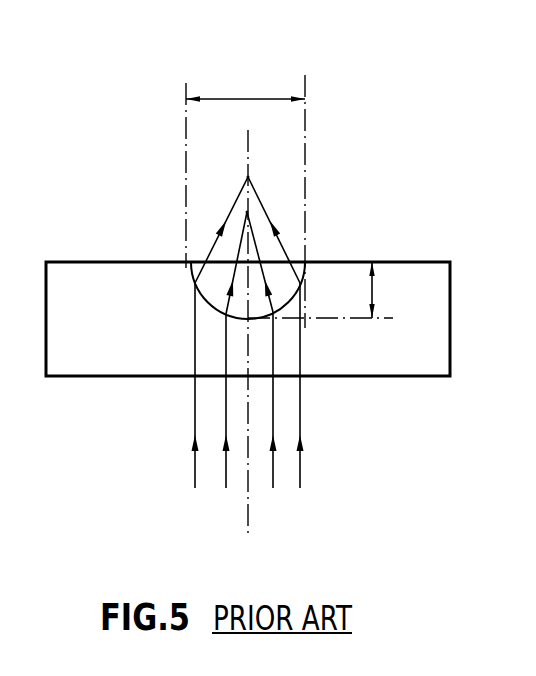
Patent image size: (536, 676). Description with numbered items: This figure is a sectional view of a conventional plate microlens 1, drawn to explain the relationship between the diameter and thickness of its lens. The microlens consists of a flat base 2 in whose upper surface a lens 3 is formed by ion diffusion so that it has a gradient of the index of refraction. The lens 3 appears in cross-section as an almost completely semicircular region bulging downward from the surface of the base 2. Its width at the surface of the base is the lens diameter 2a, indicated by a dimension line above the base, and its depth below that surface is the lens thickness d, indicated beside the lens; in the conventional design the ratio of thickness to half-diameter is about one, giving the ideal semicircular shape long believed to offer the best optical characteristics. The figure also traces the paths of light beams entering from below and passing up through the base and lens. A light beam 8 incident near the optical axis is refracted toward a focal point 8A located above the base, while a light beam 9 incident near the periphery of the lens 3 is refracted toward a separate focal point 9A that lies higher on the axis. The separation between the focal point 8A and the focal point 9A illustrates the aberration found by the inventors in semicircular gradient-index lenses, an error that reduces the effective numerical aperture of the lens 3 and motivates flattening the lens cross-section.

The plate microlens 1 is at (422, 250).
The base 2 is at (426, 362).
The diameter of the lens 2a is at (248, 99).
The lens 3 is at (199, 295).
The light beam incident near the optical axis 8 is at (273, 468).
The focal point of the near-axis light beam 8A is at (247, 212).
The light beam near the periphery of the lens 9 is at (300, 392).
The focal point of the peripheral light beam 9A is at (248, 177).
The thickness of the lens d is at (375, 290).